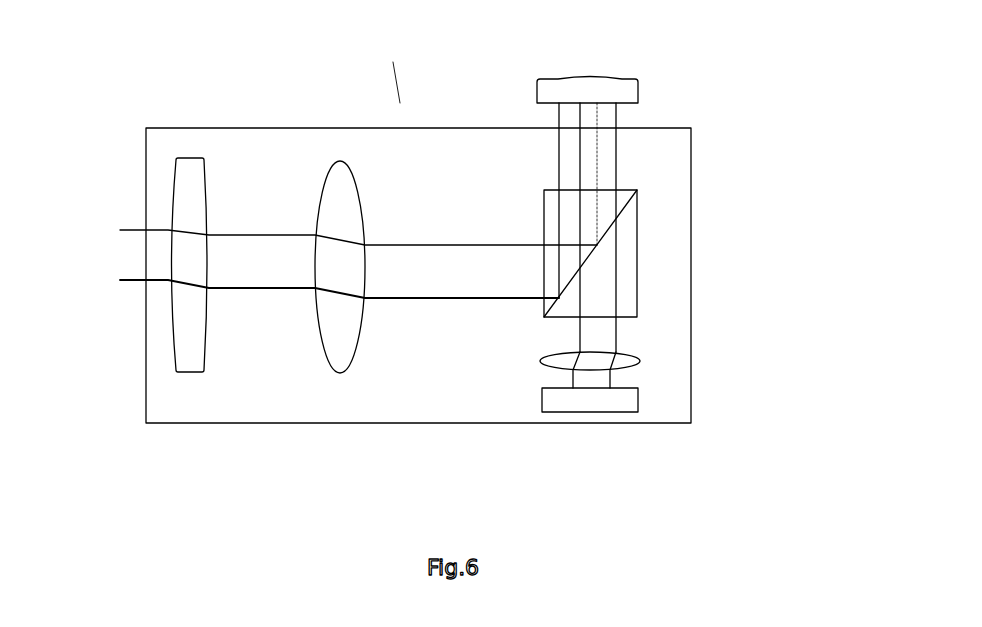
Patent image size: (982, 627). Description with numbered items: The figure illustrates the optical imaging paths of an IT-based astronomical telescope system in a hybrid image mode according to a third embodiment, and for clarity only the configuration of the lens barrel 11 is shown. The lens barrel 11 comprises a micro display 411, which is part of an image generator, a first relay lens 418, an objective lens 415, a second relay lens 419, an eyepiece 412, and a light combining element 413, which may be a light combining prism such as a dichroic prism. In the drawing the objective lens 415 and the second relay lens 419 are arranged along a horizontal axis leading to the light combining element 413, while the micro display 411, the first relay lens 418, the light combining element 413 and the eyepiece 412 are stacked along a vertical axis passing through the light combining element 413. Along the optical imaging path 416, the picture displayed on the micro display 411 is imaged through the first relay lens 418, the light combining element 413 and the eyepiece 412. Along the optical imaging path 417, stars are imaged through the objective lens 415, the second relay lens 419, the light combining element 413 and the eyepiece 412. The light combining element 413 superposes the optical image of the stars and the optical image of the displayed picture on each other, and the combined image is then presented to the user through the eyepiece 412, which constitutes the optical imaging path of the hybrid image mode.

The lens barrel 11 is at (673, 277).
The micro display 411 is at (613, 395).
The eyepiece 412 is at (603, 90).
The light combining element 413 is at (628, 232).
The objective lens 415 is at (183, 193).
The optical imaging path 416 is at (602, 337).
The optical imaging path 417 is at (447, 243).
The first relay lens 418 is at (622, 361).
The second relay lens 419 is at (337, 347).